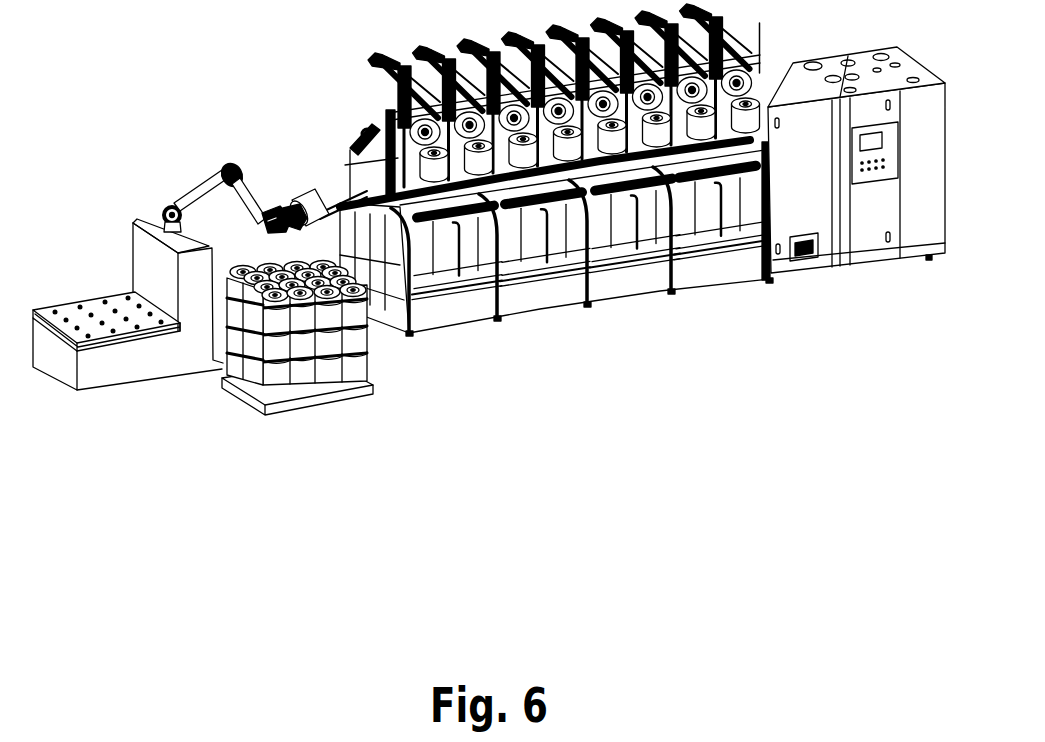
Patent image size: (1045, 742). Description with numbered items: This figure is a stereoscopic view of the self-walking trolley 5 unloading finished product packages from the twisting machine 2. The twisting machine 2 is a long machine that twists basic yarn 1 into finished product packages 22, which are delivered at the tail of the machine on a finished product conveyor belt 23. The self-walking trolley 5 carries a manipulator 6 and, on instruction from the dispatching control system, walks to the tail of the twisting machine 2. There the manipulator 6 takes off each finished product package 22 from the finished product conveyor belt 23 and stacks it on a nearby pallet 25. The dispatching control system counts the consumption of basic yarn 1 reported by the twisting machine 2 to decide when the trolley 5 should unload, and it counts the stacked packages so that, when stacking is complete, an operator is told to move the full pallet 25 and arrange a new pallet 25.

The basic yarn 1 is at (372, 128).
The twisting machine 2 is at (360, 148).
The finished product conveyor belt 23 is at (337, 197).
The finished product package 22 is at (260, 268).
The self-walking trolley 5 is at (148, 245).
The manipulator 6 is at (175, 207).
The pallet 25 is at (290, 407).